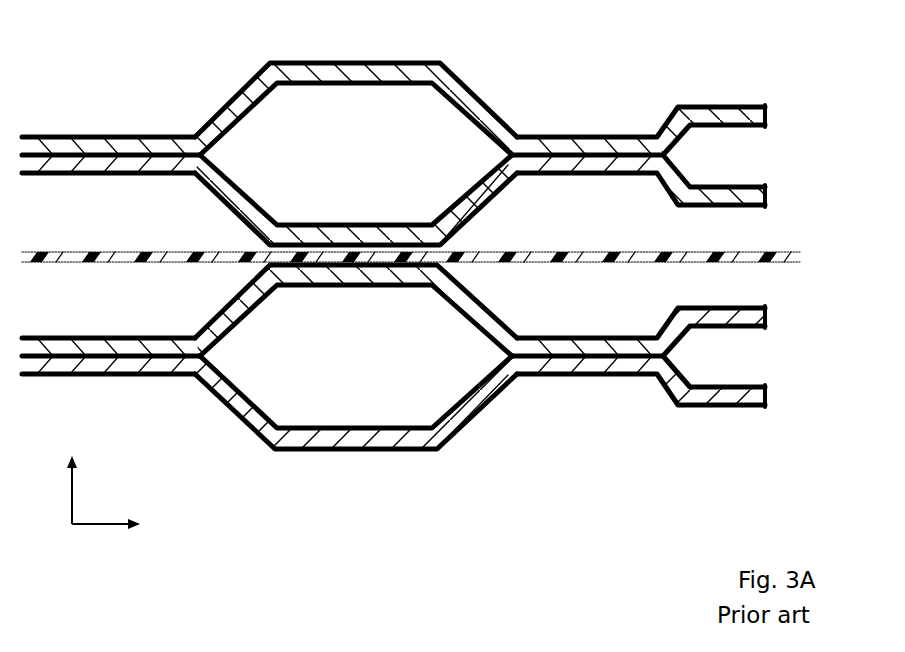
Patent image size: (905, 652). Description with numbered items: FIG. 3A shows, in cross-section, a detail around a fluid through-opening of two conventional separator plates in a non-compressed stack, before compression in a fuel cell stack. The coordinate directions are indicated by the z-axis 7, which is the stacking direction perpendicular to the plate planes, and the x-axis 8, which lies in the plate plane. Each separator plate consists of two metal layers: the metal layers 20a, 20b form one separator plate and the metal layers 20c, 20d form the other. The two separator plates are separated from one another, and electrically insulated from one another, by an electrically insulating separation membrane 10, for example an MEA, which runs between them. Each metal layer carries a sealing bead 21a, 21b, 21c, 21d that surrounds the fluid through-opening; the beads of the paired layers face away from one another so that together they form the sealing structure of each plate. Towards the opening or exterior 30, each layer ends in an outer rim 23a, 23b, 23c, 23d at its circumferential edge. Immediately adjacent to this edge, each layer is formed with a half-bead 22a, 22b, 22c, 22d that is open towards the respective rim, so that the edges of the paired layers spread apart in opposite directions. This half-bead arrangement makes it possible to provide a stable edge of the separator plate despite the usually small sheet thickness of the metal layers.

The separation membrane 10 is at (800, 257).
The metal layer 20a is at (118, 363).
The metal layer 20b is at (92, 348).
The metal layer 20c is at (85, 166).
The metal layer 20d is at (63, 143).
The sealing bead 21a is at (360, 435).
The sealing bead 21b is at (362, 272).
The sealing bead 21c is at (325, 237).
The sealing bead 21d is at (333, 68).
The half-bead 22a is at (747, 395).
The half-bead 22b is at (715, 318).
The half-bead 22c is at (742, 195).
The half-bead 22d is at (727, 112).
The rim 23a is at (765, 393).
The rim 23b is at (765, 318).
The rim 23c is at (767, 187).
The rim 23d is at (767, 112).
The opening 30 is at (435, 253).
The z-axis 7 is at (72, 478).
The x-axis 8 is at (87, 526).